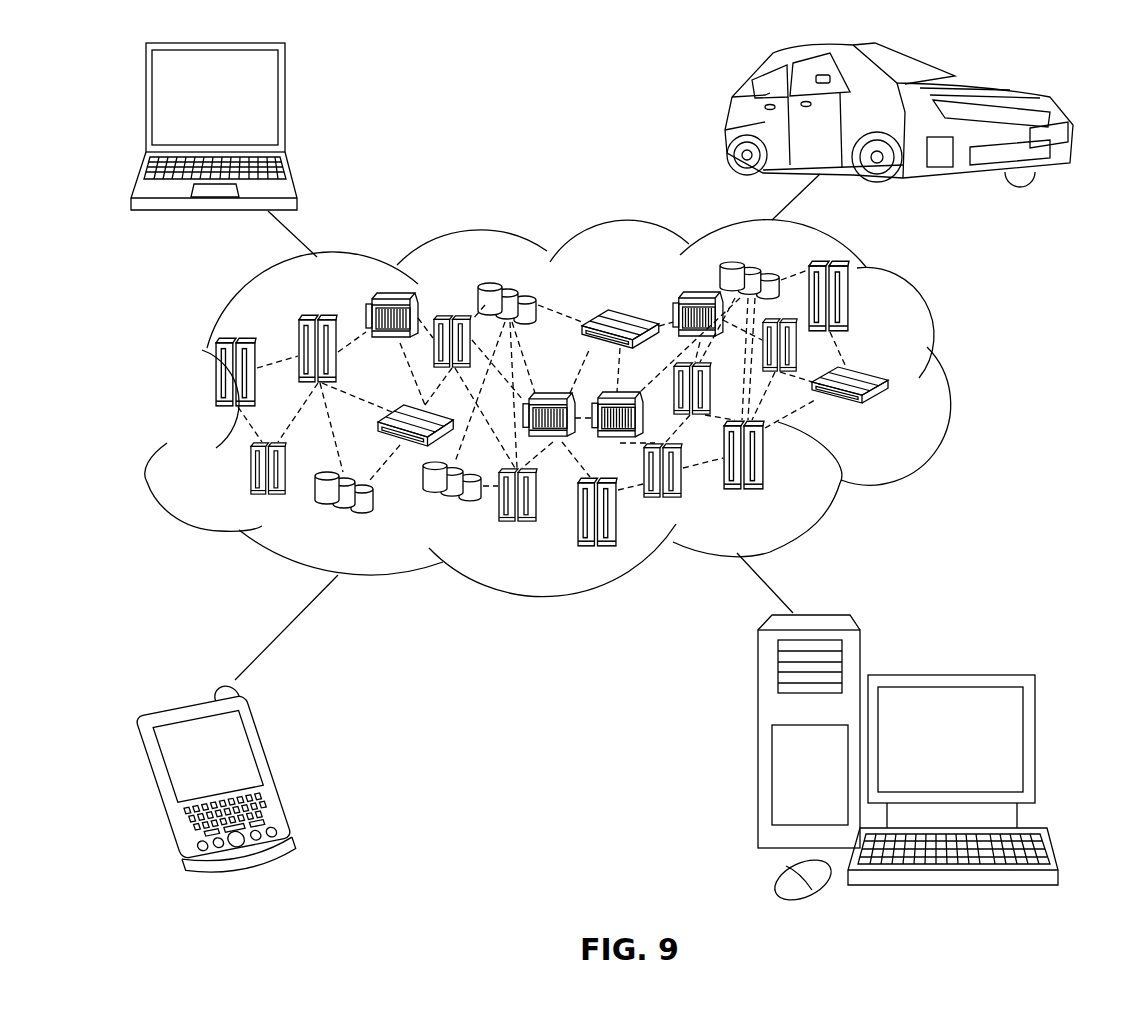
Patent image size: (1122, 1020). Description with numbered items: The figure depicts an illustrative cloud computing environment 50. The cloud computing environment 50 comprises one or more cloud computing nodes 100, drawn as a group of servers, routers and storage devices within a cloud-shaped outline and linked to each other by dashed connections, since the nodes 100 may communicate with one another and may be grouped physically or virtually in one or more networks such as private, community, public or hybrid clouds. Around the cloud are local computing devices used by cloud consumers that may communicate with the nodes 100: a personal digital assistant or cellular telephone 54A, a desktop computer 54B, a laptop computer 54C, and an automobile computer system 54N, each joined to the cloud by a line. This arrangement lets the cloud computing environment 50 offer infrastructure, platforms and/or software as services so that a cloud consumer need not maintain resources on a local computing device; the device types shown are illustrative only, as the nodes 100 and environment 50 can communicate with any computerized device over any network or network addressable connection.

The cloud computing environment 50 is at (951, 386).
The cloud computing nodes 100 is at (888, 411).
The personal digital assistant (PDA) or cellular telephone 54A is at (273, 771).
The desktop computer 54B is at (948, 672).
The laptop computer 54C is at (288, 111).
The automobile computer system 54N is at (727, 124).